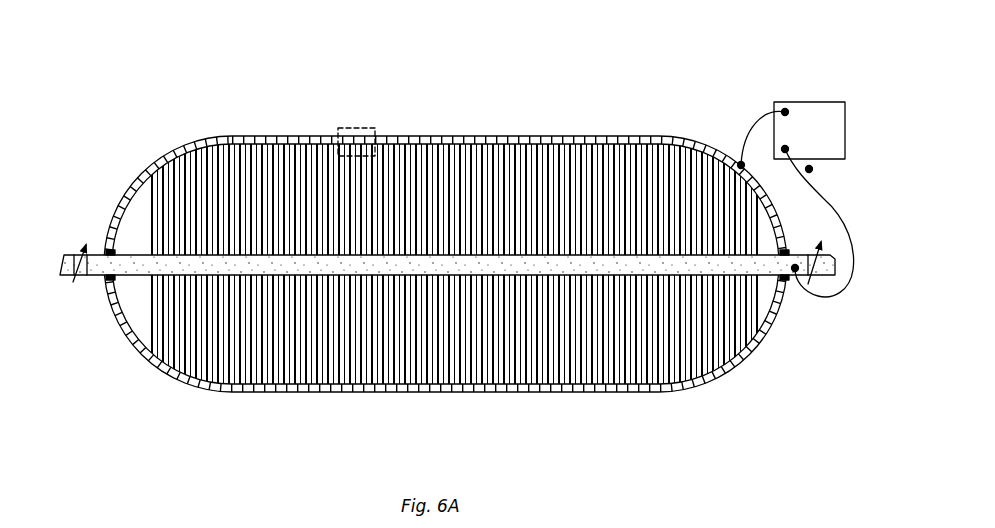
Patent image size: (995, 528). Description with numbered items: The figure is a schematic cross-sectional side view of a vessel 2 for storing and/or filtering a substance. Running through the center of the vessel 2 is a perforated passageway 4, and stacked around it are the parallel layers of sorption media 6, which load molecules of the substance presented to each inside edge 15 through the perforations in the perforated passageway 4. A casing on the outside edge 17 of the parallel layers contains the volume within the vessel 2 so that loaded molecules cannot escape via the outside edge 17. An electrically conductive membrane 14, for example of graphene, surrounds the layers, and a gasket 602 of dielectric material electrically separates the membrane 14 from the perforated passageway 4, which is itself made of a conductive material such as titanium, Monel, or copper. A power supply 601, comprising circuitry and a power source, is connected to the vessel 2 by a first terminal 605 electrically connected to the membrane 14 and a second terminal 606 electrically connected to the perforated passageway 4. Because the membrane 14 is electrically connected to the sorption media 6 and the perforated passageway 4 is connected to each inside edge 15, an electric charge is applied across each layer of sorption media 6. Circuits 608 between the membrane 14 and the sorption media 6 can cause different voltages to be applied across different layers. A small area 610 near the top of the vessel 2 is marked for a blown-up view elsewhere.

The vessel 2 is at (162, 99).
The perforated passageway 4 is at (751, 266).
The sorption media 6 is at (275, 343).
The membrane 14 is at (556, 385).
The inside edge 15 is at (513, 247).
The outside edge 17 is at (449, 133).
The power supply 601 is at (820, 94).
The gasket 602 is at (100, 268).
The first terminal 605 is at (777, 104).
The second terminal 606 is at (777, 141).
The circuits 608 is at (327, 132).
The area 610 is at (358, 120).